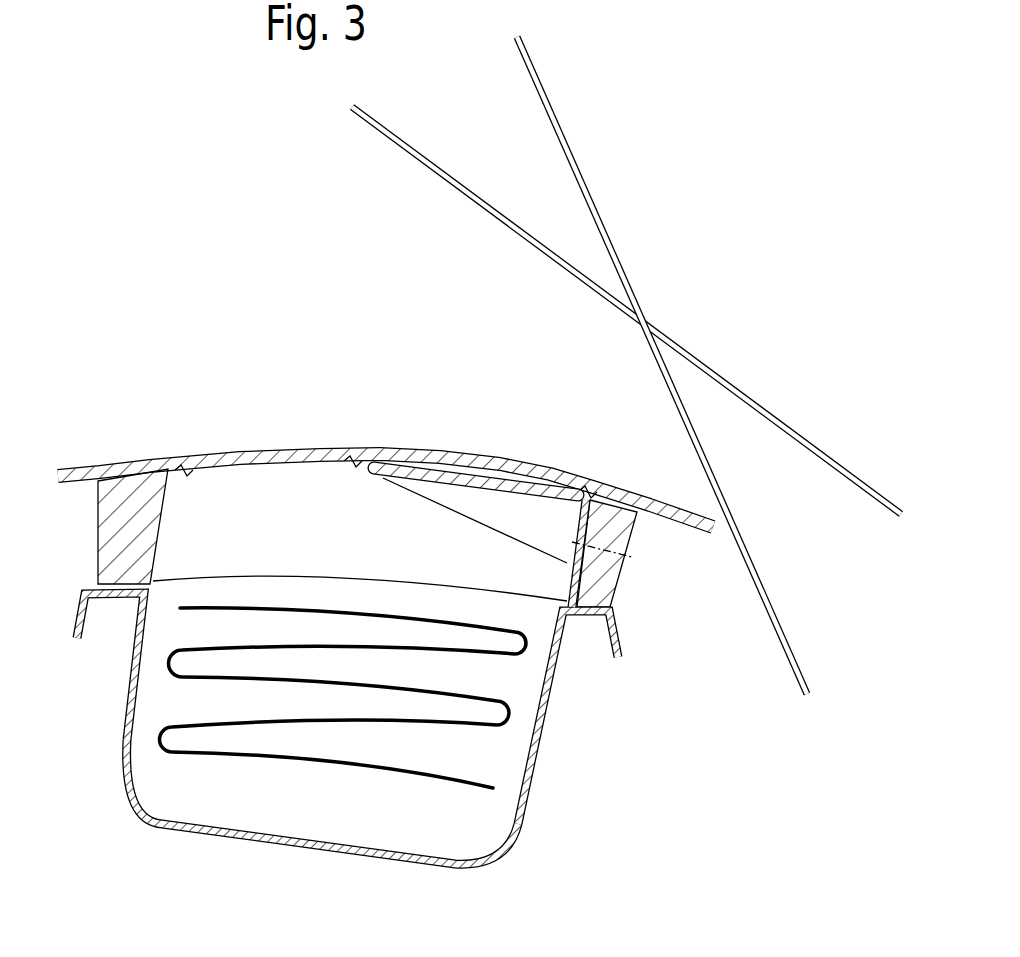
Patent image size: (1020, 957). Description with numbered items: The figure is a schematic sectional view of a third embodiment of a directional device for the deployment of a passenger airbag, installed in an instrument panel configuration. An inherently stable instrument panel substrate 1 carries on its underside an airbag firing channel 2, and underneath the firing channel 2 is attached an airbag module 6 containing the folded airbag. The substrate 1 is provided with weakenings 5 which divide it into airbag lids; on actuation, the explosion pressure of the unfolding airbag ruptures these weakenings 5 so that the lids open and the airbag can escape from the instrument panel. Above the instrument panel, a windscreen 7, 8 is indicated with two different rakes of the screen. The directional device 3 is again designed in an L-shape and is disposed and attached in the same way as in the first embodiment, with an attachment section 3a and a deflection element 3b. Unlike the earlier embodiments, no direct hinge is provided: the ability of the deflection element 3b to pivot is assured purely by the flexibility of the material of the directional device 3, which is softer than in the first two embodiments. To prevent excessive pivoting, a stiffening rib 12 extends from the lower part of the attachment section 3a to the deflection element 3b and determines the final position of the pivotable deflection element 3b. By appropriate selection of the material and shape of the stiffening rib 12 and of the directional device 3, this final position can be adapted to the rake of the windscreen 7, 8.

The instrument panel substrate 1 is at (97, 470).
The airbag firing channel 2 is at (105, 535).
The directional device 3 is at (522, 572).
The attachment section 3a is at (600, 522).
The deflection element 3b is at (374, 482).
The weakening 5 is at (192, 457).
The airbag module 6 is at (147, 812).
The windscreen 7 is at (407, 143).
The windscreen 8 is at (567, 142).
The stiffening rib 12 is at (477, 523).